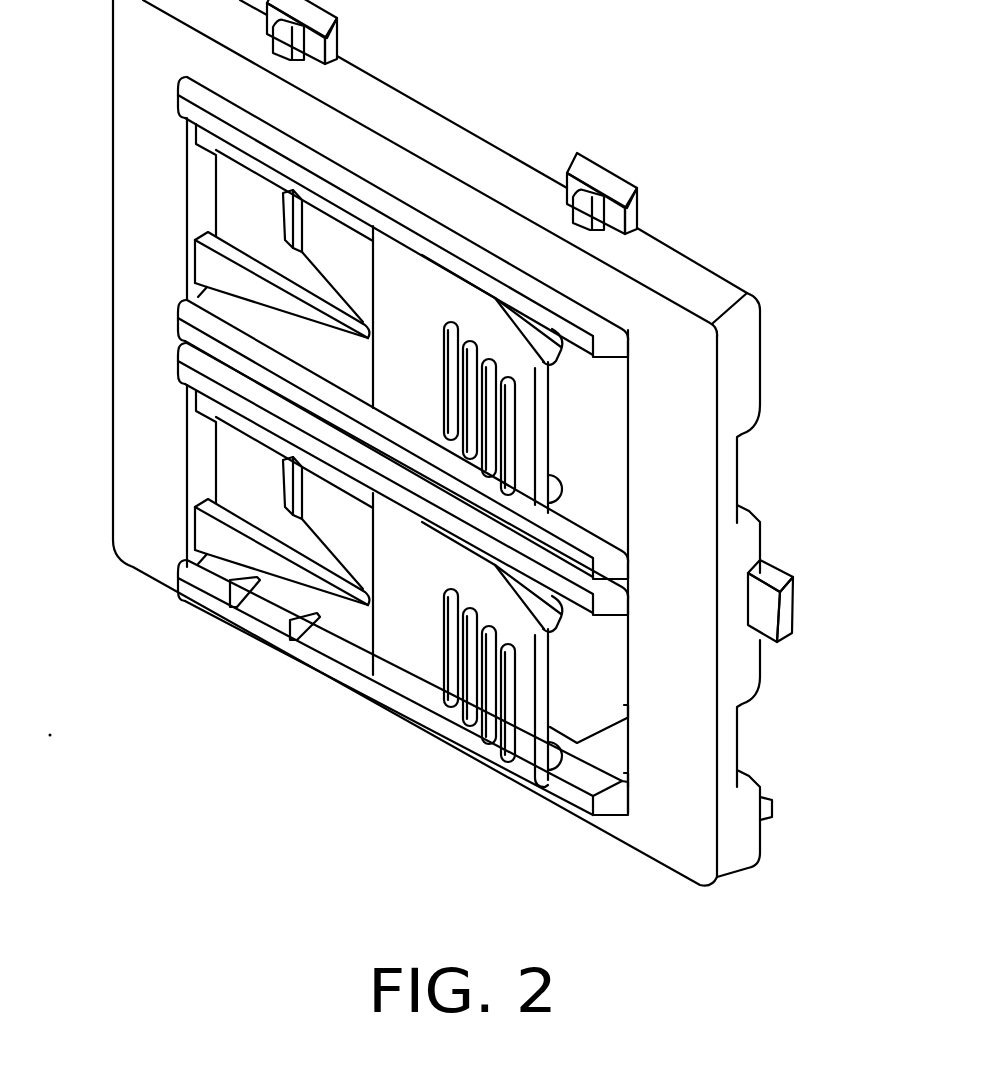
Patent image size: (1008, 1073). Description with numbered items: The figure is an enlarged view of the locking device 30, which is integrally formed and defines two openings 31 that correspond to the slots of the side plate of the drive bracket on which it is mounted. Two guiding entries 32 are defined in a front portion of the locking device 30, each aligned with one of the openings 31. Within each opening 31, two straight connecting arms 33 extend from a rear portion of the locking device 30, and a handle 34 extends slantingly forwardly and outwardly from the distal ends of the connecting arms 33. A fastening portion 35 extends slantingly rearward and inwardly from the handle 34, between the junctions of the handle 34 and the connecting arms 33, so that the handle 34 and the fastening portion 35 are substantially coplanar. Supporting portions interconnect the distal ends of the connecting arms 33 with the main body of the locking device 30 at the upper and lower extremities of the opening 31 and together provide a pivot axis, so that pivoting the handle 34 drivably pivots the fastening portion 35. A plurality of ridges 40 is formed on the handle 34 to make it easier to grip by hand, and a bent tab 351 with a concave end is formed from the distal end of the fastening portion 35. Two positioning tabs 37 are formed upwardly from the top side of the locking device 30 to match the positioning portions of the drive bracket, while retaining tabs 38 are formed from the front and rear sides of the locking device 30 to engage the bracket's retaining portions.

The locking device 30 is at (491, 91).
The opening 31 is at (240, 445).
The guiding entry 32 is at (743, 743).
The connecting arm 33 is at (222, 543).
The handle 34 is at (520, 767).
The fastening portion 35 is at (325, 513).
The bent tab 351 is at (295, 478).
The positioning tab 37 is at (608, 182).
The retaining tab 38 is at (783, 608).
The ridge 40 is at (473, 713).